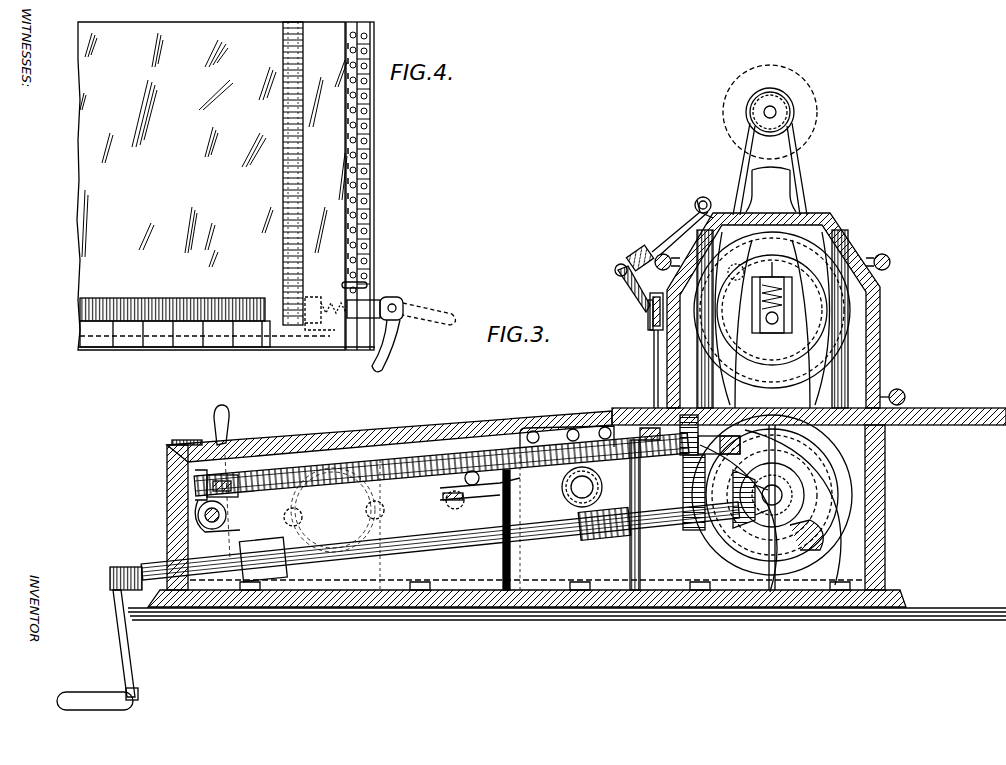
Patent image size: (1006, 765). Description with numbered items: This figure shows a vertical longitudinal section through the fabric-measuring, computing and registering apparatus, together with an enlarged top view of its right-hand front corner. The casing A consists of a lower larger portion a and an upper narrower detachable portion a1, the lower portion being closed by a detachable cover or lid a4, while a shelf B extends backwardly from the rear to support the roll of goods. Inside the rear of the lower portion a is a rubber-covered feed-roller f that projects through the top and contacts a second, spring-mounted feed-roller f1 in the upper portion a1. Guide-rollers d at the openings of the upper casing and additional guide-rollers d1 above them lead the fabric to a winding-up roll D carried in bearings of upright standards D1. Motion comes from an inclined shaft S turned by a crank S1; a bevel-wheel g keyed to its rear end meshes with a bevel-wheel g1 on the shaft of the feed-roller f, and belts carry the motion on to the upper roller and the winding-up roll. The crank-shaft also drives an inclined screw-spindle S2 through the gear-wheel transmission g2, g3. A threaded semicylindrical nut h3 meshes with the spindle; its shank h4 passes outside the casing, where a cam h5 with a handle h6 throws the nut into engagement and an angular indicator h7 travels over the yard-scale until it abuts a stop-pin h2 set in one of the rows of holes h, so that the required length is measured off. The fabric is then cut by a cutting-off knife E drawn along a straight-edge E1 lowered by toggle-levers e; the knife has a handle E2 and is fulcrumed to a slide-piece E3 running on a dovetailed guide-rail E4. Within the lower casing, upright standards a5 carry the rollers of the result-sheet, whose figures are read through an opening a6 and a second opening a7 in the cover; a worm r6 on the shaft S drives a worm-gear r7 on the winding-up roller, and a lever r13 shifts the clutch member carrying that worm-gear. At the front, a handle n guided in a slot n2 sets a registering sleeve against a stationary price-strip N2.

In FIG. 3, the casing A is at (583, 608).
In FIG. 3, the shelf B is at (990, 405).
In FIG. 3, the lower larger portion of the casing a is at (885, 492).
In FIG. 3, the upper narrower detachable portion of the casing a1 is at (805, 217).
In FIG. 3, the detachable cover or lid a4 is at (389, 429).
In FIG. 3, the upright standards a5 is at (475, 522).
In FIG. 3, the opening a6 is at (567, 420).
In FIG. 3, the second opening a7 is at (655, 404).
In FIG. 3, the winding-up roll D is at (776, 112).
In FIG. 3, the upright standards D1 is at (775, 167).
In FIG. 3, the toggle-levers e is at (695, 208).
In FIG. 3, the cutting-off knife E is at (650, 378).
In FIG. 3, the straight-edge E1 is at (638, 248).
In FIG. 3, the handle E2 is at (628, 282).
In FIG. 3, the slide-piece E3 is at (648, 318).
In FIG. 3, the guide-rail E4 is at (654, 340).
In FIG. 3, the guide-rollers d is at (596, 384).
In FIG. 3, the additional guide-rollers d1 is at (655, 262).
In FIG. 3, the feed-roller f is at (835, 462).
In FIG. 3, the second feed-roller f1 is at (845, 304).
In FIG. 3, the bevel-wheel g is at (740, 525).
In FIG. 3, the bevel-wheel g1 is at (800, 528).
In FIG. 3, the gear-wheel g2 is at (683, 482).
In FIG. 3, the gear-wheel g3 is at (680, 434).
In FIG. 3, the inclined shaft S is at (110, 580).
In FIG. 3, the crank S1 is at (127, 680).
In FIG. 4, the screw-spindle S2 is at (283, 185).
In FIG. 3, the screw-spindle S2 is at (395, 470).
In FIG. 3, the worm r6 is at (592, 530).
In FIG. 3, the worm-gear r7 is at (604, 470).
In FIG. 3, the lever r13 is at (548, 500).
In FIG. 3, the handle n is at (227, 419).
In FIG. 4, the slot n2 is at (138, 306).
In FIG. 4, the stationary price-strip N2 is at (162, 340).
In FIG. 3, the stationary price-strip N2 is at (185, 441).
In FIG. 4, the row of holes h is at (367, 36).
In FIG. 4, the stop-pin h2 is at (368, 286).
In FIG. 4, the threaded semicylindrical nut h3 is at (318, 292).
In FIG. 4, the shank h4 is at (388, 311).
In FIG. 3, the shank h4 is at (207, 485).
In FIG. 4, the cam h5 is at (394, 296).
In FIG. 4, the handle h6 is at (394, 346).
In FIG. 4, the angular indicator h7 is at (360, 312).